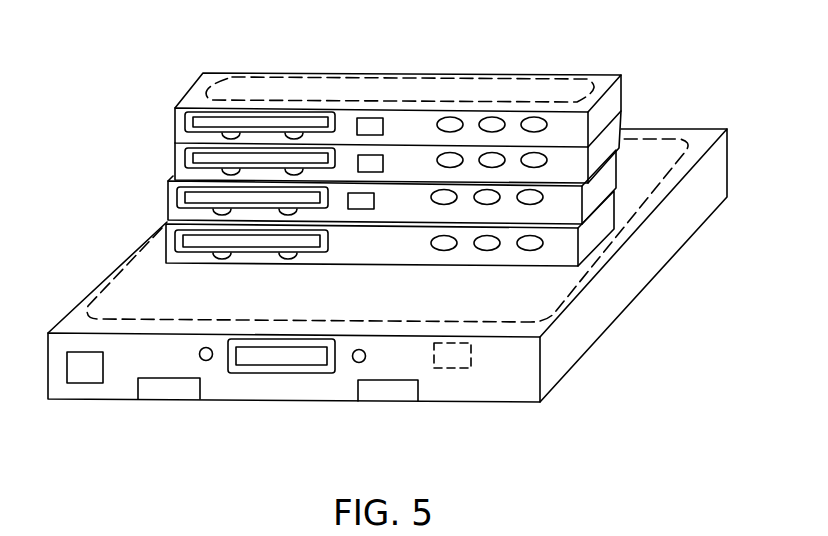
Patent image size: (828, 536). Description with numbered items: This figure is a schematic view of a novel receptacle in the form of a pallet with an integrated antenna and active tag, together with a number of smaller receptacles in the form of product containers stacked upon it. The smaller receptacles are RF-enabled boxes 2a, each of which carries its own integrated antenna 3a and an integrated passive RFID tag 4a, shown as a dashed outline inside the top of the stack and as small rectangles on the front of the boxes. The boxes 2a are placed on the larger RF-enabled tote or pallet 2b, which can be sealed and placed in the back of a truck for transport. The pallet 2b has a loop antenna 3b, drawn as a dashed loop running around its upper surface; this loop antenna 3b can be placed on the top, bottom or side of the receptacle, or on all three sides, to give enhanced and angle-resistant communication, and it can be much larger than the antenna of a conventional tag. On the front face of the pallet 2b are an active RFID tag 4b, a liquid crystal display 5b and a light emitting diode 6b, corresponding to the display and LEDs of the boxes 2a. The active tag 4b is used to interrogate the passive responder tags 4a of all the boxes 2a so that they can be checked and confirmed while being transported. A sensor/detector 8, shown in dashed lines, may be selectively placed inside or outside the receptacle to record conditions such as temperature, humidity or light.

The RF-enabled box 2a is at (606, 130).
The integrated antenna 3a is at (513, 78).
The passive RFID tag 4a is at (384, 157).
The RF-enabled tote or pallet 2b is at (648, 282).
The loop antenna 3b is at (120, 268).
The active RFID tag 4b is at (78, 382).
The liquid crystal display 5b is at (293, 374).
The light emitting diode 6b is at (210, 361).
The sensor/detector 8 is at (457, 369).